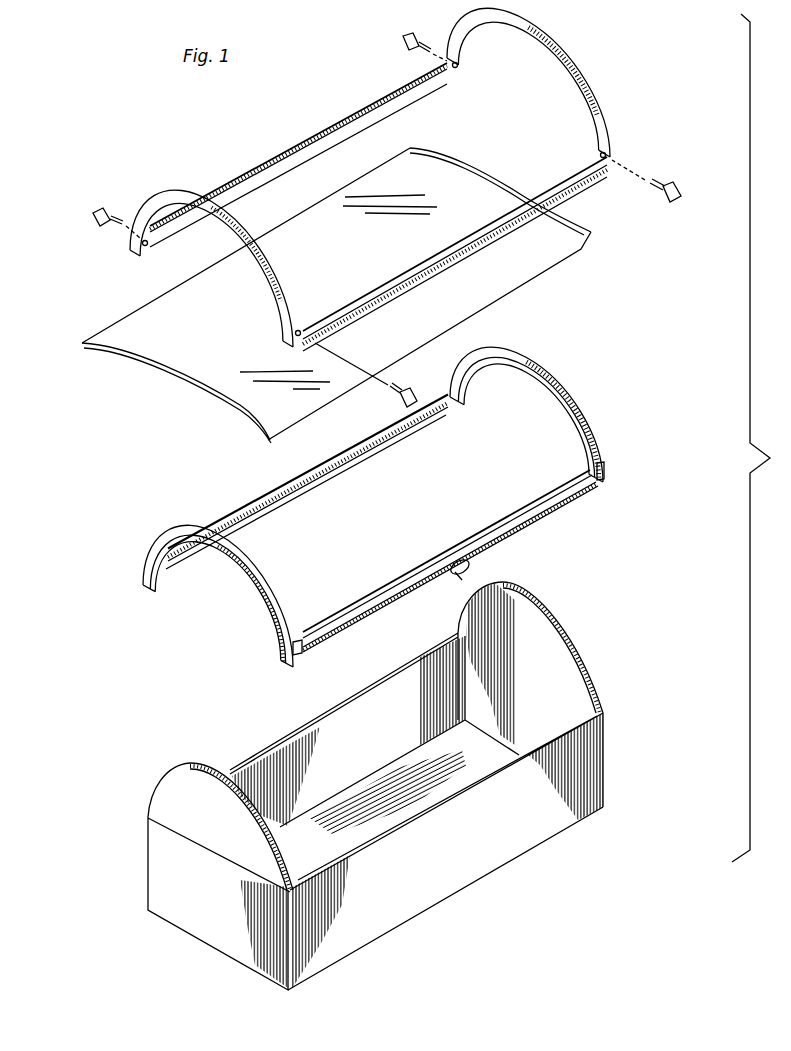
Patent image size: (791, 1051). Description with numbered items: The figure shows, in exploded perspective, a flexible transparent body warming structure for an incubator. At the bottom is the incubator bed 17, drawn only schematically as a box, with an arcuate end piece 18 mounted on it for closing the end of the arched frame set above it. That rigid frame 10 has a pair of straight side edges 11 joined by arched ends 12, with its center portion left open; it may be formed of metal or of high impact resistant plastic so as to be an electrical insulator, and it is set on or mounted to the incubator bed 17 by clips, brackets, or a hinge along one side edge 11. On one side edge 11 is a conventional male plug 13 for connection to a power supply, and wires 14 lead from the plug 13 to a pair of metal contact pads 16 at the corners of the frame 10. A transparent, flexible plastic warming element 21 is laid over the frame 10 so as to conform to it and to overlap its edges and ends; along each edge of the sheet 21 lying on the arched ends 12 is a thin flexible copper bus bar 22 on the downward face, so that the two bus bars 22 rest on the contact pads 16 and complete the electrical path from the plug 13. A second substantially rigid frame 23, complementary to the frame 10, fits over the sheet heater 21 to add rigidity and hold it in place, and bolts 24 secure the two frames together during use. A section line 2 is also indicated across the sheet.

The section line 2- 2 is at (190, 377).
The rigid frame 10 is at (620, 418).
The side edge 11 is at (272, 502).
The arched end 12 is at (567, 380).
The male plug 13 is at (478, 561).
The wires 14 is at (567, 500).
The metal contact pad 16 is at (290, 652).
The incubator bed 17 is at (607, 755).
The arcuate end piece 18 is at (177, 787).
The warming element 21 is at (352, 295).
The bus bar 22 is at (90, 345).
The second rigid frame 23 is at (573, 55).
The bolts 24 is at (100, 207).